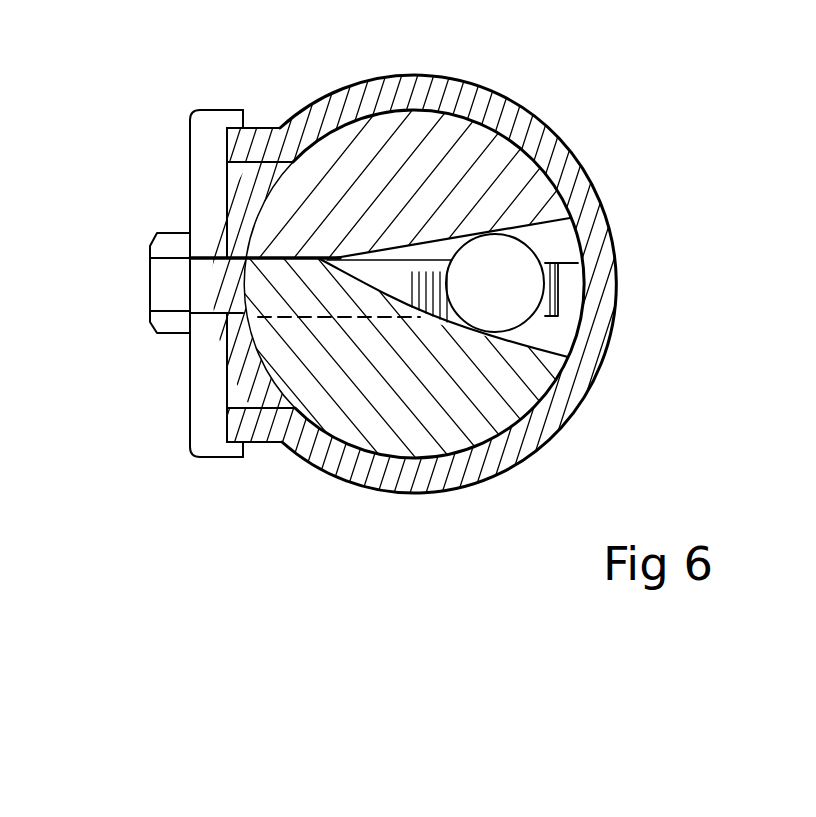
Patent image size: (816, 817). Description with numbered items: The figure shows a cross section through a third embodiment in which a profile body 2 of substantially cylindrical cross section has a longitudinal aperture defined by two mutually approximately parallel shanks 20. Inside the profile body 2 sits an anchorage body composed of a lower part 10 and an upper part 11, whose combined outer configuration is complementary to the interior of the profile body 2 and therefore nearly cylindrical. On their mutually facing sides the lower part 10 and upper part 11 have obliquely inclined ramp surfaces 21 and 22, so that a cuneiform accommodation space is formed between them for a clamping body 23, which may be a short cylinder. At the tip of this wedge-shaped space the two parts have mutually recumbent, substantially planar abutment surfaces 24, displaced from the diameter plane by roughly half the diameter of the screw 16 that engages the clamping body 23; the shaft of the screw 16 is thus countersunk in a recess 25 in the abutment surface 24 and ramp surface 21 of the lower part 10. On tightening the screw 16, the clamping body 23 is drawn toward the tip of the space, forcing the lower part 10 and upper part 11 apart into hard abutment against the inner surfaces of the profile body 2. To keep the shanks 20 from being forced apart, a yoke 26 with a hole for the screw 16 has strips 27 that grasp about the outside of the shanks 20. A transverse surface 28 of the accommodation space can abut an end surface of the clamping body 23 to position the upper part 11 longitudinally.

The profile body 2 is at (512, 450).
The lower part 10 is at (422, 430).
The upper part 11 is at (406, 150).
The screw 16 is at (168, 283).
The shanks 20 is at (251, 140).
The ramp surface 21 is at (535, 364).
The ramp surface 22 is at (550, 228).
The clamping body 23 is at (520, 283).
The abutment surfaces 24 is at (280, 243).
The recess 25 is at (346, 322).
The yoke 26 is at (202, 211).
The strips 27 is at (242, 110).
The transverse surface 28 is at (553, 333).